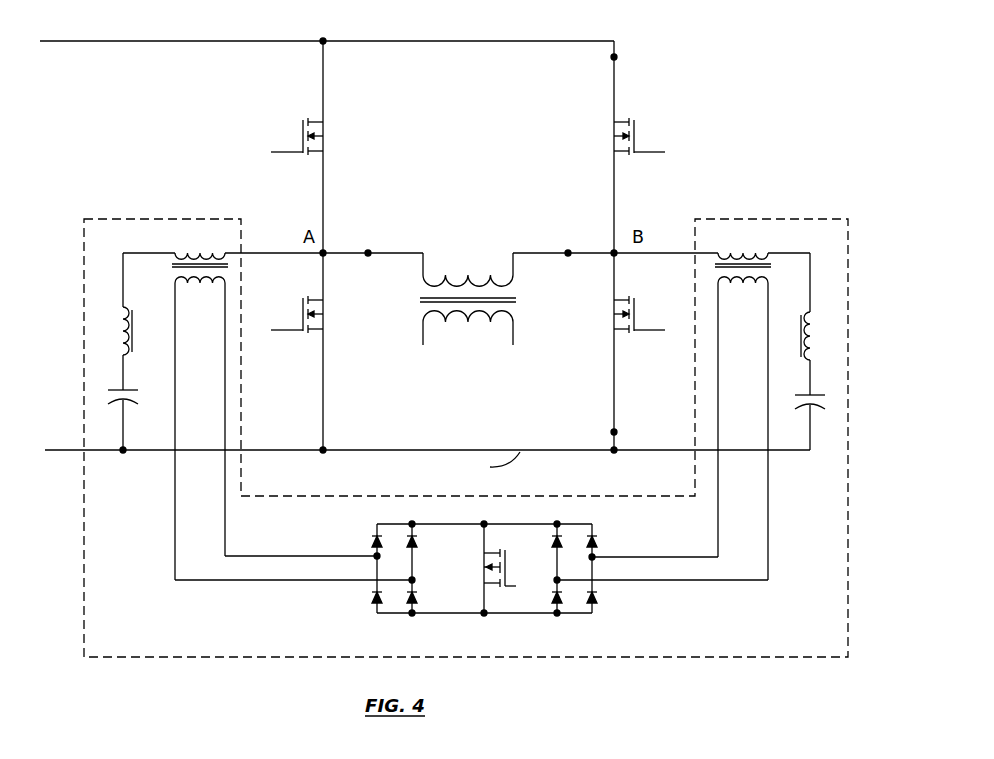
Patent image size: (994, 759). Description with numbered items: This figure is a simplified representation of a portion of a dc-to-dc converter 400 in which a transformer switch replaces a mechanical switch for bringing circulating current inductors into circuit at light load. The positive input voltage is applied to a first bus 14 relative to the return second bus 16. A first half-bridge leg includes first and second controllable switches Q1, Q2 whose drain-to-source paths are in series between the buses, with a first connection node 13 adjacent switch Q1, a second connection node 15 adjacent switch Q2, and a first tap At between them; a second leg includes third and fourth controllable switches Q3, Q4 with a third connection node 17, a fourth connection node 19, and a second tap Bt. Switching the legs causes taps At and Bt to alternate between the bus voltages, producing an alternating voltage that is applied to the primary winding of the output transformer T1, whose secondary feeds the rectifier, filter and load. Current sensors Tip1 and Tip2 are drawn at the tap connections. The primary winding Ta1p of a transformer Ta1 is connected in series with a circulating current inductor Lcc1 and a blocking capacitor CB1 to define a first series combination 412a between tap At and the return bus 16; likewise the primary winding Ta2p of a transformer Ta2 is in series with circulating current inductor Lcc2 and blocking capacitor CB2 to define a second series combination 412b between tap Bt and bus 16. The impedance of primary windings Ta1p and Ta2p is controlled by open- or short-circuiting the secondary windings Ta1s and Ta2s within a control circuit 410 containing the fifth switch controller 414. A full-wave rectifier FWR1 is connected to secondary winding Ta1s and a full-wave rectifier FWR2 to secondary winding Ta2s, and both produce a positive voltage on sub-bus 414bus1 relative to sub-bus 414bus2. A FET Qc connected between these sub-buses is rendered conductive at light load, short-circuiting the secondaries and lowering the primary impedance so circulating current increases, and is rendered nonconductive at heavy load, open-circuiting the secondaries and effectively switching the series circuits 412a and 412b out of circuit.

The first bus 14 is at (231, 40).
The first connection node 13 is at (327, 47).
The third connection node 17 is at (612, 58).
The second connection node 15 is at (322, 447).
The second bus 16 is at (413, 449).
The fourth connection node 19 is at (617, 432).
The dc-to-dc converter 400 is at (237, 693).
The auxiliary circuit 410 is at (137, 652).
The first series combination 412a is at (206, 378).
The second series combination 412b is at (726, 376).
The fifth switch controller 414 is at (471, 566).
The sub-bus 414bus1 is at (430, 523).
The sub-bus 414bus2 is at (551, 614).
The first controllable switch Q1 is at (297, 123).
The second controllable switch Q2 is at (297, 332).
The third controllable switch Q3 is at (650, 123).
The fourth controllable switch Q4 is at (639, 332).
The auxiliary or fifth switch Qc is at (510, 568).
The output transformer T1 is at (474, 313).
The transformer Ta1 is at (206, 378).
The primary winding Ta1p is at (211, 257).
The secondary winding Ta1s is at (200, 281).
The transformer Ta2 is at (757, 376).
The primary winding Ta2p is at (753, 257).
The secondary winding Ta2s is at (742, 281).
The circulating current inductor Lcc1 is at (133, 312).
The circulating current inductor Lcc2 is at (800, 317).
The blocking capacitor CB1 is at (136, 402).
The blocking capacitor CB2 is at (800, 405).
The full-wave rectifier FWR1 is at (463, 562).
The full-wave rectifier FWR2 is at (541, 617).
The primary current sensor Tip1 is at (369, 250).
The primary current sensor Tip2 is at (569, 250).
The first tap At is at (328, 259).
The second tap Bt is at (611, 259).